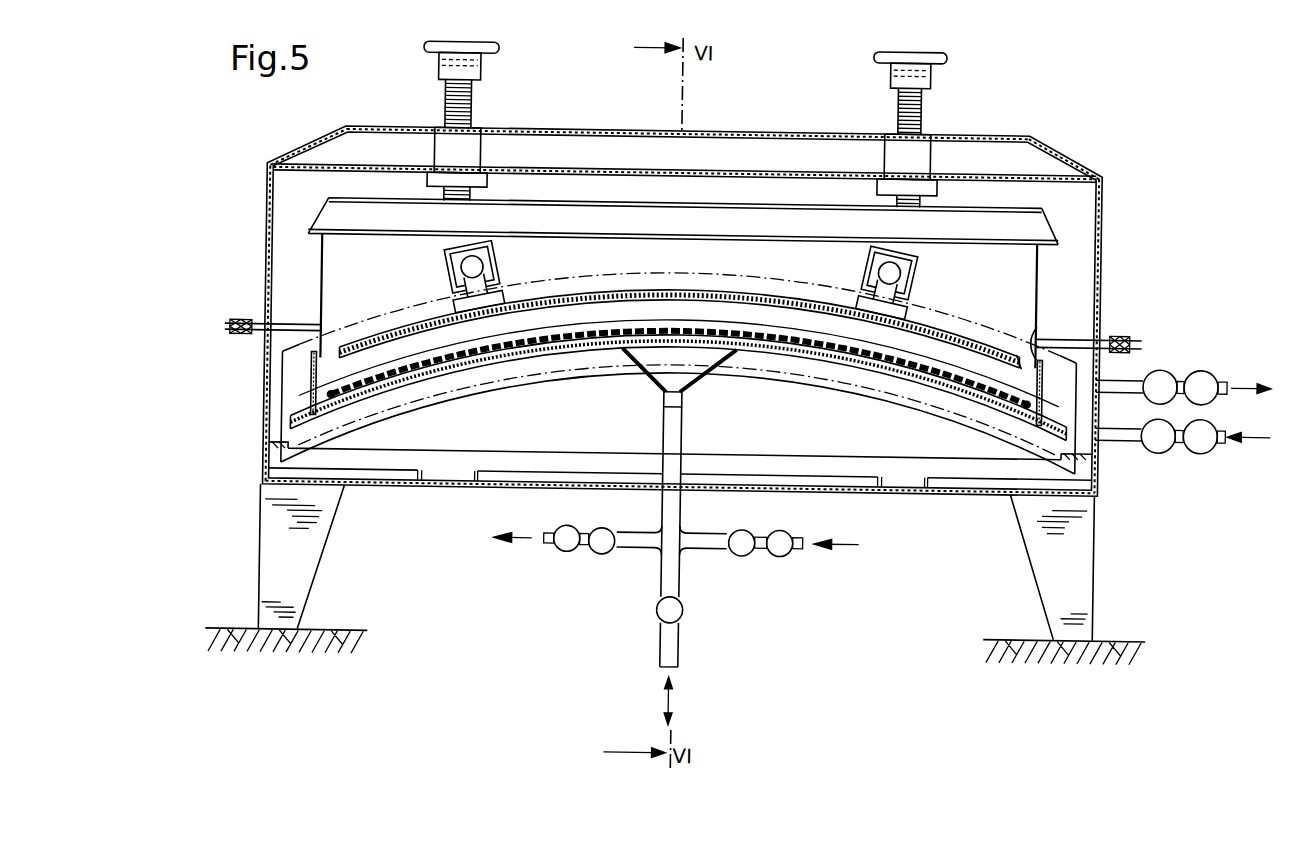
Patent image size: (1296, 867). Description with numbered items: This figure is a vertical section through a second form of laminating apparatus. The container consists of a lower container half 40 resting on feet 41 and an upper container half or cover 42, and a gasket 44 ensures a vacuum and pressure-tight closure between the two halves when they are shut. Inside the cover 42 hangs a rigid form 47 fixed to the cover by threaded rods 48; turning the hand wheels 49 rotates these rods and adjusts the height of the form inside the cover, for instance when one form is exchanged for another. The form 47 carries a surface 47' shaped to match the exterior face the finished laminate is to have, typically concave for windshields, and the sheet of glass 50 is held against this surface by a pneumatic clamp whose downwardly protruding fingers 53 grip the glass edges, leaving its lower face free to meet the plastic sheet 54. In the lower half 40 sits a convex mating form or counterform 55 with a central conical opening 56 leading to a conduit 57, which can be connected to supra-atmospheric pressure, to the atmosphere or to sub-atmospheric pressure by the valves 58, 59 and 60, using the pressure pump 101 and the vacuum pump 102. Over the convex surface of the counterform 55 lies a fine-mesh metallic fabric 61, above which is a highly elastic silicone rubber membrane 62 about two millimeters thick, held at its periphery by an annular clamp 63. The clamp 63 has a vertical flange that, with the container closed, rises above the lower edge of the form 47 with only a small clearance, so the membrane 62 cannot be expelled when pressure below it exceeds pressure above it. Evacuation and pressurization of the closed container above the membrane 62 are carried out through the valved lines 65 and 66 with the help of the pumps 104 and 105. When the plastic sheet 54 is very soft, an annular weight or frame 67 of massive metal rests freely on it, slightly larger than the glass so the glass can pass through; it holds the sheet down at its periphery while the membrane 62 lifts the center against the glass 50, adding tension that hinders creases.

The lower container half 40 is at (266, 440).
The feet 41 is at (312, 600).
The upper container half or cover 42 is at (266, 238).
The gasket 44 is at (226, 330).
The rigid form 47 is at (691, 283).
The surface 47' is at (1054, 335).
The threaded rods 48 is at (470, 101).
The hand wheels 49 is at (493, 52).
The sheet of glass 50 is at (556, 298).
The fingers 53 is at (458, 300).
The plastic sheet 54 is at (405, 377).
The convex mating form or counterform 55 is at (858, 440).
The conical opening 56 is at (700, 397).
The conduit 57 is at (665, 441).
The valve 58 is at (747, 555).
The valve 59 is at (686, 612).
The valve 60 is at (605, 555).
The metallic fabric 61 is at (500, 371).
The membrane 62 is at (438, 381).
The annular clamp 63 is at (313, 390).
The valved line 65 is at (1184, 371).
The valved line 66 is at (1182, 459).
The annular weight or frame 67 is at (1001, 355).
The pump 101 is at (787, 529).
The pump 102 is at (570, 527).
The pump 104 is at (1198, 366).
The pump 105 is at (1202, 447).